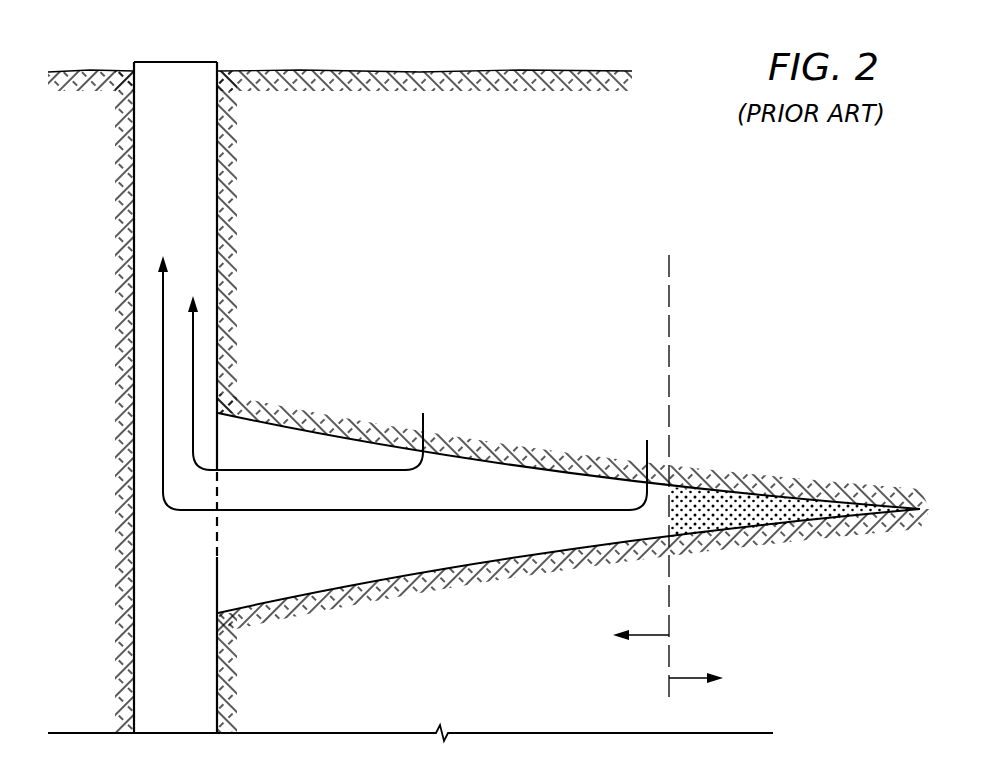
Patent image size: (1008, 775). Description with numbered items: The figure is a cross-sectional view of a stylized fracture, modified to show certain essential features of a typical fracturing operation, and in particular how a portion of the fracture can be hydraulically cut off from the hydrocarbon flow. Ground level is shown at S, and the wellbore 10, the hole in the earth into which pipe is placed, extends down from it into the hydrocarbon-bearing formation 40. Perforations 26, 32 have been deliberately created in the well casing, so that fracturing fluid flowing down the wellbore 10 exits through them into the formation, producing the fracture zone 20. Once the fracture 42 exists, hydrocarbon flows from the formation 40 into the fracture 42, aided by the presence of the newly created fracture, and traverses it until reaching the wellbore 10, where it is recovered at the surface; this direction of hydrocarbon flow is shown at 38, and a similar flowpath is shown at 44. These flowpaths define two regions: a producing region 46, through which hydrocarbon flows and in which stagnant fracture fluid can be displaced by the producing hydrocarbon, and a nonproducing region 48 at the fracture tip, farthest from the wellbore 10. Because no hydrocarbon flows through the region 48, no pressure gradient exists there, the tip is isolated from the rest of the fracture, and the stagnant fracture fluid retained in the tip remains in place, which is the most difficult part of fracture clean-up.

The ground level S is at (478, 71).
The wellbore 10 is at (133, 157).
The fracture zone 20 is at (541, 467).
The perforation 26 is at (213, 475).
The perforation 32 is at (213, 550).
The direction of hydrocarbon flow 38 is at (321, 468).
The formation 40 is at (388, 272).
The fracture 42 is at (487, 492).
The flowpath 44 is at (598, 508).
The producing region 46 is at (622, 639).
The nonproducing region 48 is at (712, 682).